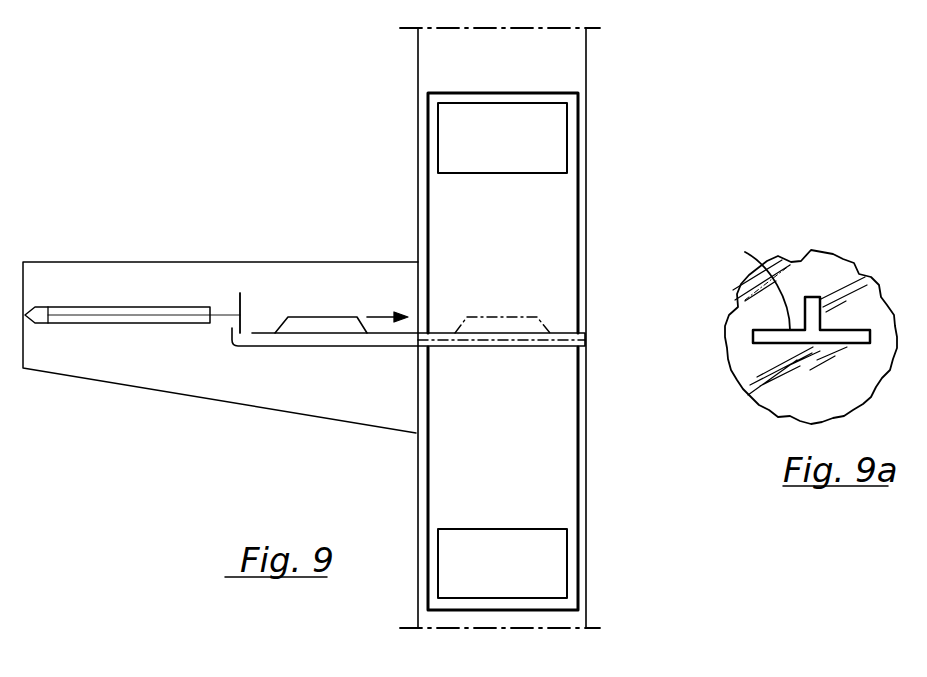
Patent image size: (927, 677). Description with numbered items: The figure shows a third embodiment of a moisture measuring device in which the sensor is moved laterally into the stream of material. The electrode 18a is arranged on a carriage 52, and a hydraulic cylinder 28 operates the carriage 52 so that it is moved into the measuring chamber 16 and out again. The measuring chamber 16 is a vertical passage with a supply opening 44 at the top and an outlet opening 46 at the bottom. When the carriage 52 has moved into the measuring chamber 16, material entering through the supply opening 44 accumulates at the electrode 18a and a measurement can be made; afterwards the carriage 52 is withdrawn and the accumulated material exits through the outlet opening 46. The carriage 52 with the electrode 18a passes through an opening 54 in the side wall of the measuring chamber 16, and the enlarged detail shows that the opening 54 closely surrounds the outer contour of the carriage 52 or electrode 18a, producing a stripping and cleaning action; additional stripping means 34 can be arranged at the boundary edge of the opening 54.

In FIG. 9, the measuring chamber 16 is at (523, 278).
In FIG. 9, the electrode 18a is at (322, 330).
In FIG. 9, the hydraulic cylinder 28 is at (103, 317).
In FIG. 9A, the stripping means 34 is at (828, 322).
In FIG. 9, the supply opening 44 is at (549, 139).
In FIG. 9, the outlet opening 46 is at (550, 572).
In FIG. 9, the carriage 52 is at (242, 327).
In FIG. 9, the opening 54 is at (430, 327).
In FIG. 9A, the opening 54 is at (753, 341).